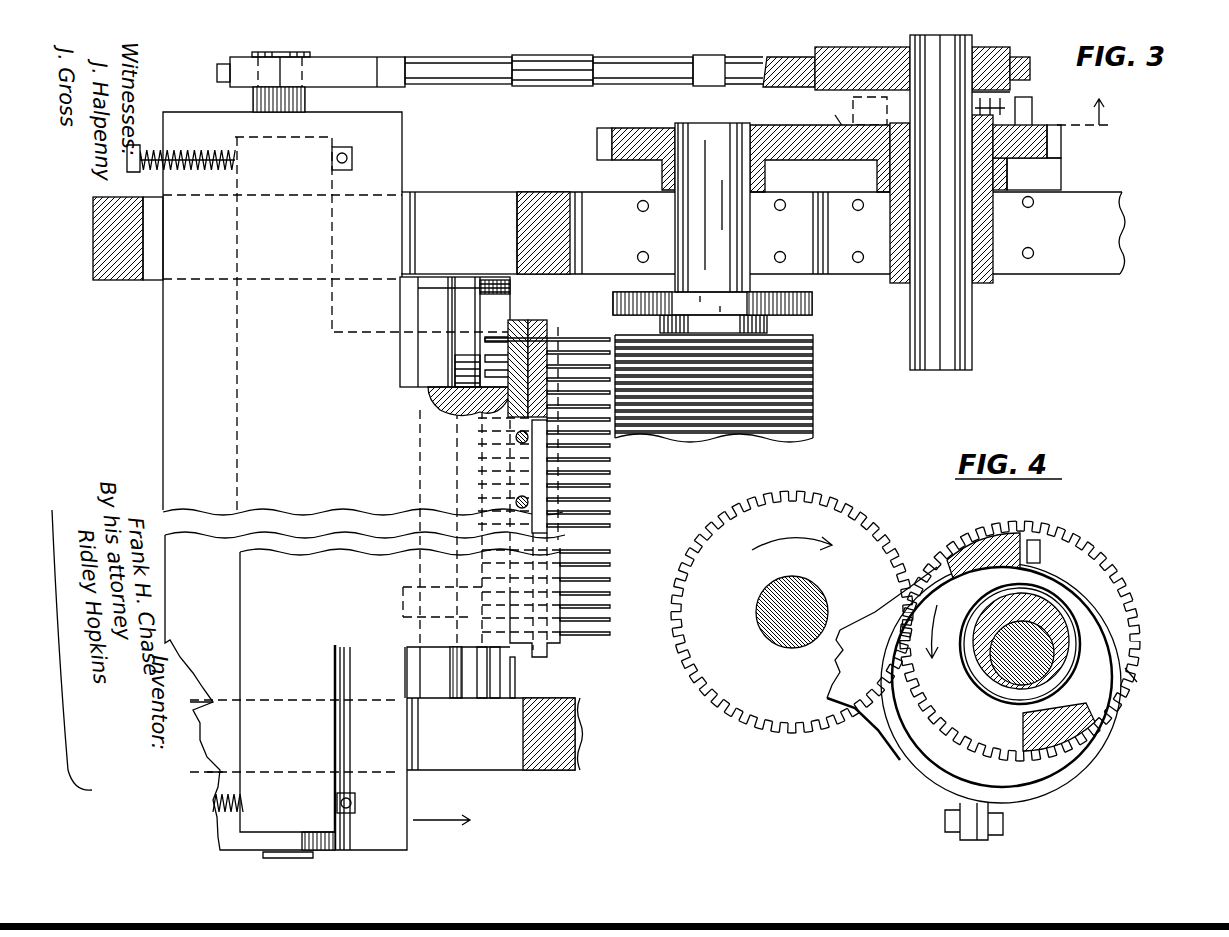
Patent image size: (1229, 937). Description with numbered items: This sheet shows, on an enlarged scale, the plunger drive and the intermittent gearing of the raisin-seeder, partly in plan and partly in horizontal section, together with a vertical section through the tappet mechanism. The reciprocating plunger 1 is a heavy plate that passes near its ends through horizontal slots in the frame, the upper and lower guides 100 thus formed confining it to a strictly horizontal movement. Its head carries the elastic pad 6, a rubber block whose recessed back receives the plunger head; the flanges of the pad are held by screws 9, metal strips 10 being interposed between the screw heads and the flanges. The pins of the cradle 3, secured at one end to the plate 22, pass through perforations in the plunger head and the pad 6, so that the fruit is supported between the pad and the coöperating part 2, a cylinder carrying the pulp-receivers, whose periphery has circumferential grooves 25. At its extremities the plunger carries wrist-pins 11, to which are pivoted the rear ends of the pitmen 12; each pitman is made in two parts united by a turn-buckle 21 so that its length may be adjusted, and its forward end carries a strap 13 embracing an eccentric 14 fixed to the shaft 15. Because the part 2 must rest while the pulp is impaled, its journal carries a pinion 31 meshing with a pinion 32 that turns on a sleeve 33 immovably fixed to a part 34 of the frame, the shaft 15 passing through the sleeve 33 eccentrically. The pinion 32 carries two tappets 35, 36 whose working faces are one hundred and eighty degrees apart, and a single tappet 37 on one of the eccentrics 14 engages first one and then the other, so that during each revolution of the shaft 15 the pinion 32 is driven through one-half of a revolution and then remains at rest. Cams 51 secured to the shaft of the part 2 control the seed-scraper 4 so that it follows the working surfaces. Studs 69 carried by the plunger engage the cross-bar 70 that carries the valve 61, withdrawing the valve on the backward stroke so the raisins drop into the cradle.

In FIG. 3, the reciprocating plunger 1 is at (340, 246).
In FIG. 3, the part carrying the pulp-receivers 2 is at (714, 282).
In FIG. 3, the cradle 3 is at (589, 338).
In FIG. 3, the seed-scraper 4 is at (982, 126).
In FIG. 3, the elastic pad 6 is at (547, 320).
In FIG. 3, the screws 9 is at (522, 496).
In FIG. 3, the strips of metal 10 is at (518, 444).
In FIG. 3, the wrist-pins 11 is at (297, 105).
In FIG. 3, the pitmen 12 is at (476, 84).
In FIG. 3, the straps 13 is at (1032, 68).
In FIG. 4, the straps 13 is at (1055, 788).
In FIG. 3, the eccentrics 14 is at (820, 88).
In FIG. 4, the eccentrics 14 is at (930, 760).
In FIG. 3, the shaft 15 is at (972, 330).
In FIG. 4, the shaft 15 is at (1065, 667).
In FIG. 3, the turn-buckle 21 is at (556, 86).
In FIG. 3, the plate 22 is at (478, 313).
In FIG. 3, the circumferential grooves 25 is at (463, 307).
In FIG. 3, the pinion 31 is at (626, 128).
In FIG. 4, the pinion 31 is at (773, 496).
In FIG. 3, the pinion 32 is at (1058, 141).
In FIG. 4, the pinion 32 is at (1132, 676).
In FIG. 3, the sleeve 33 is at (1035, 173).
In FIG. 4, the sleeve 33 is at (1070, 613).
In FIG. 3, the part of the frame 34 is at (1022, 262).
In FIG. 3, the tappet 35 is at (870, 111).
In FIG. 4, the tappet 35 is at (1023, 538).
In FIG. 3, the tappet 36 is at (1032, 108).
In FIG. 4, the tappet 36 is at (1068, 733).
In FIG. 3, the tappet 37 is at (1003, 92).
In FIG. 4, the tappet 37 is at (1066, 600).
In FIG. 3, the cams 51 is at (813, 303).
In FIG. 3, the valve 61 is at (518, 637).
In FIG. 3, the studs or pins 69 is at (352, 156).
In FIG. 3, the cross-bar 70 is at (287, 692).
In FIG. 3, the upper and lower guides 100 is at (492, 481).